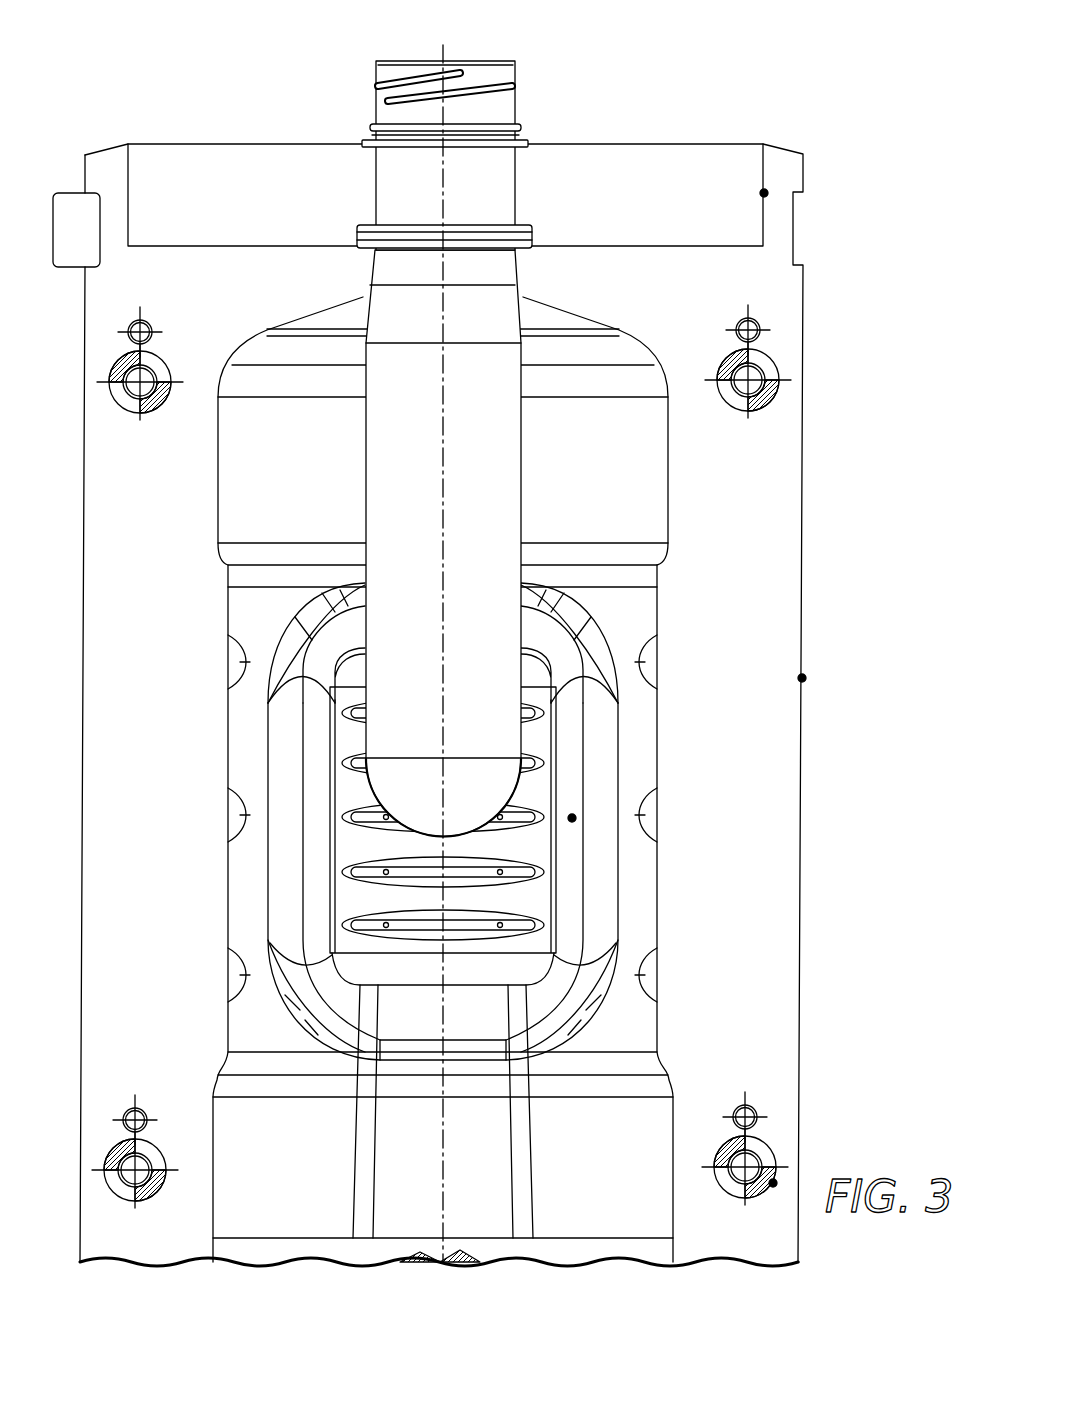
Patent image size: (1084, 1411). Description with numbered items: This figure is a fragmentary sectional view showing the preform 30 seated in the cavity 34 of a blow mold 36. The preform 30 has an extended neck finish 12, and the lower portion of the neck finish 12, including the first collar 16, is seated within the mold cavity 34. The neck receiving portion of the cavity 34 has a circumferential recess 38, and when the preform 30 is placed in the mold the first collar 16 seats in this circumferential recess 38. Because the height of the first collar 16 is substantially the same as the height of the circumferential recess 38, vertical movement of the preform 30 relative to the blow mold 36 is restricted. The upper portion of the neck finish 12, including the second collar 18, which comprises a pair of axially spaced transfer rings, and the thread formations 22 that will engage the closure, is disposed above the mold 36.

The neck finish 12 is at (520, 107).
The thread formations 22 is at (449, 62).
The second collar 18 is at (522, 131).
The first collar 16 is at (362, 225).
The circumferential recess 38 is at (530, 237).
The preform 30 is at (481, 512).
The cavity 34 is at (602, 446).
The blow mold 36 is at (805, 595).